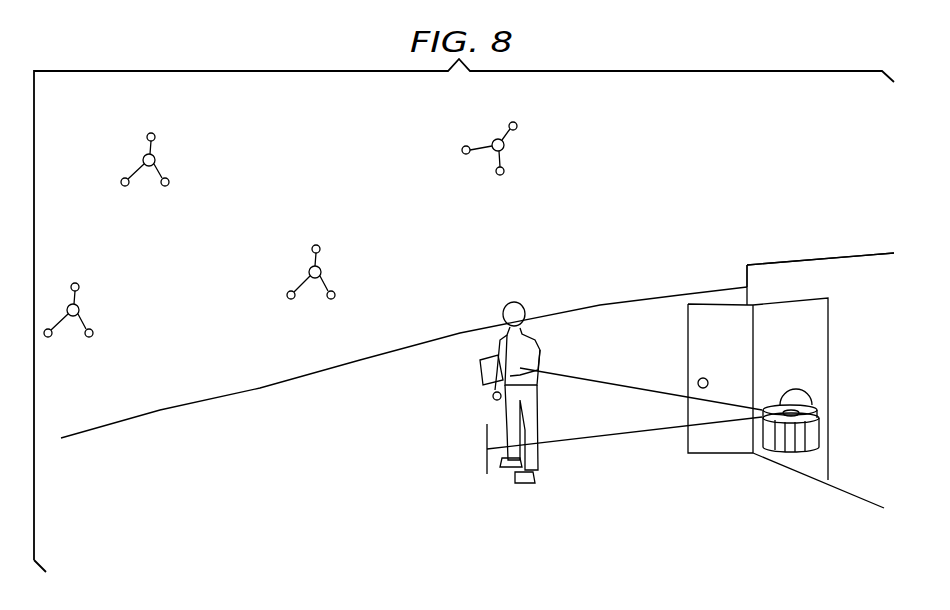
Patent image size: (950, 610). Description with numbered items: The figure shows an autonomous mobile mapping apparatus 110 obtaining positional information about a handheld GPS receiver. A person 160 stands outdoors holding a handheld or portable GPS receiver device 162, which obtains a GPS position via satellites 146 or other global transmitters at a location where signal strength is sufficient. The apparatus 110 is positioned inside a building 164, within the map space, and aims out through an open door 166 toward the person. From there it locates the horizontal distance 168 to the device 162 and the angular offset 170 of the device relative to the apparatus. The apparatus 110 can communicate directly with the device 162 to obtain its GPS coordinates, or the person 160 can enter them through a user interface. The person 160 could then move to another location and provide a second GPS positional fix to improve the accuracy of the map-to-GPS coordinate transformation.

The autonomous mobile mapping apparatus 110 is at (805, 436).
The satellites 146 is at (155, 157).
The person 160 is at (524, 305).
The handheld GPS receiver device 162 is at (480, 366).
The building 164 is at (795, 260).
The door 166 is at (686, 330).
The horizontal distance 168 is at (487, 458).
The angular offset 170 is at (645, 388).